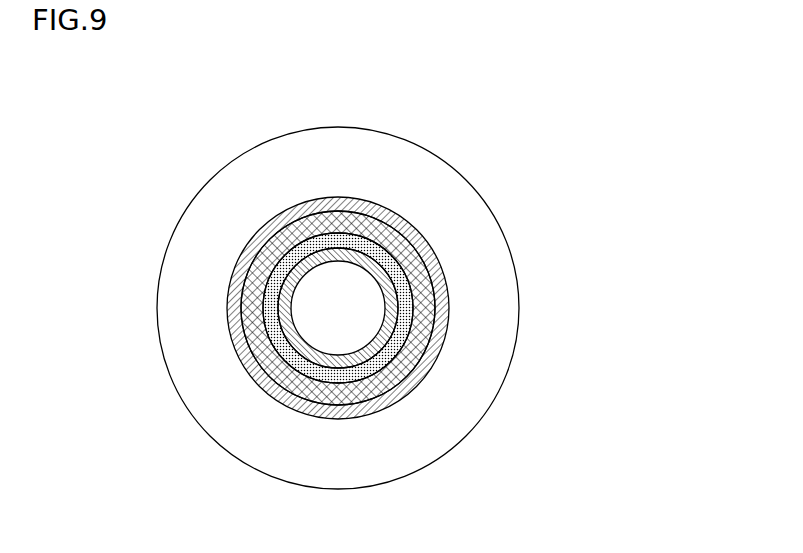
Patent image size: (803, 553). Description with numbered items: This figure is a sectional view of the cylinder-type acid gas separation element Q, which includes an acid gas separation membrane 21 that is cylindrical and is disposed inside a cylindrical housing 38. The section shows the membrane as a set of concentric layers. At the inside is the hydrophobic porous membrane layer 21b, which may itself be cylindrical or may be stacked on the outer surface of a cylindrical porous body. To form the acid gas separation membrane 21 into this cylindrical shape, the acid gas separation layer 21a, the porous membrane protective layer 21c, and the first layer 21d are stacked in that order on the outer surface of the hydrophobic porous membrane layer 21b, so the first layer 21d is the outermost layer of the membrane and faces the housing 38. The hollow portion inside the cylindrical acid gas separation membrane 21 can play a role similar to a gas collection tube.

The cylinder-type acid gas separation element Q is at (212, 142).
The cylindrical housing 38 is at (468, 180).
The acid gas separation membrane 21 is at (663, 183).
The first layer 21d is at (420, 228).
The porous membrane protective layer 21c is at (423, 258).
The acid gas separation layer 21a is at (420, 308).
The hydrophobic porous membrane layer 21b is at (393, 355).